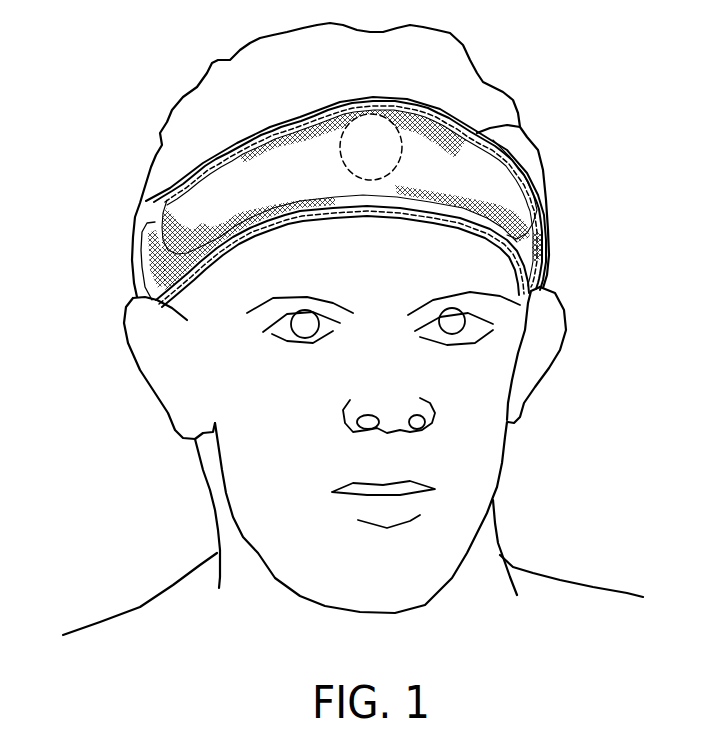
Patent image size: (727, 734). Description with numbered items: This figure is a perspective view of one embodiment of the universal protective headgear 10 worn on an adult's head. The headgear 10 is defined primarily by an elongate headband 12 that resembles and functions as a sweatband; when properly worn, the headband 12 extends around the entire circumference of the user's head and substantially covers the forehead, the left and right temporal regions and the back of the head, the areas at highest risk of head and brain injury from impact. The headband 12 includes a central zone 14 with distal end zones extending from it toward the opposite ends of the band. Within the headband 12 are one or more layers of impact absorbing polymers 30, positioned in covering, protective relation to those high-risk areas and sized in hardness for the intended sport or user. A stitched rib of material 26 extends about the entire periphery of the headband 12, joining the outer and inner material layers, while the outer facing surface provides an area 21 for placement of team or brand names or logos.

The universal protective headgear 10 is at (352, 169).
The headband 12 is at (398, 251).
The central zone 14 is at (364, 193).
The area for placement of team or brand names and/or logos 21 is at (435, 106).
The stitched rib of material 26 is at (348, 167).
The impact absorbing polymeric layers 30 is at (180, 206).